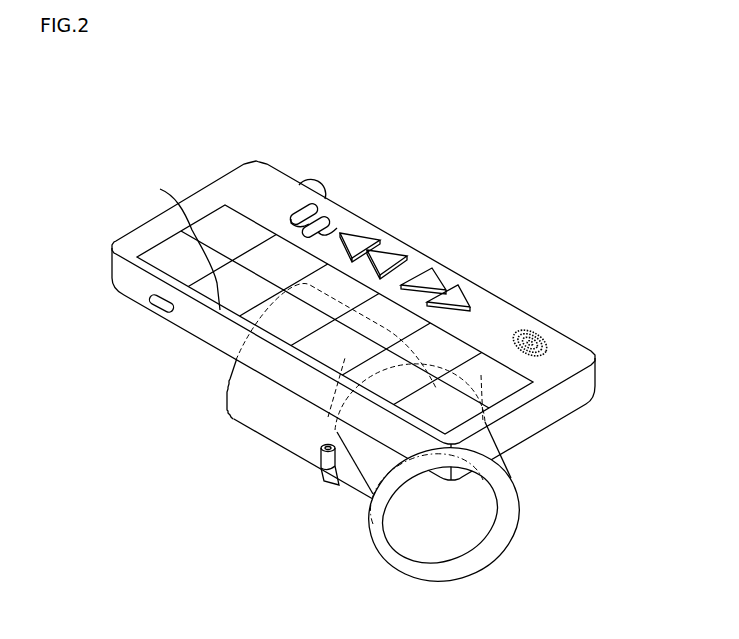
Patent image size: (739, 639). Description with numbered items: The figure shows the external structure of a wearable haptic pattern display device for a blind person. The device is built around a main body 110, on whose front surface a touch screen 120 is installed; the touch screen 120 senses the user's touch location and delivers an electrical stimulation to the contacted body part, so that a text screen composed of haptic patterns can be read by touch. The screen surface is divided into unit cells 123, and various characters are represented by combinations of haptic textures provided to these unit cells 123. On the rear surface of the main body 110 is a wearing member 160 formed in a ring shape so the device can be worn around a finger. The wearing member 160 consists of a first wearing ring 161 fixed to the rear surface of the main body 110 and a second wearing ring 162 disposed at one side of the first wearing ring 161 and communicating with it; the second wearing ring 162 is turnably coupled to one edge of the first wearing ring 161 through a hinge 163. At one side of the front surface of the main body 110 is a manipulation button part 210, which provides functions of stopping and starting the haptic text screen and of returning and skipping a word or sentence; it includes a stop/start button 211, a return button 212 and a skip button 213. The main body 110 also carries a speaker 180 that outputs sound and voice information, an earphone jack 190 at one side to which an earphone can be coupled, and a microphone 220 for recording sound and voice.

The main body 110 is at (224, 187).
The touch screen 120 is at (176, 250).
The unit cells 123 is at (160, 189).
The wearing member 160 is at (252, 454).
The first wearing ring 161 is at (242, 393).
The second wearing ring 162 is at (361, 500).
The hinge 163 is at (321, 470).
The speaker 180 is at (540, 333).
The earphone jack 190 is at (319, 183).
The manipulation button part 210 is at (414, 214).
The stop/start button 211 is at (343, 196).
The return button 212 is at (388, 258).
The skip button 213 is at (465, 248).
The microphone 220 is at (150, 304).